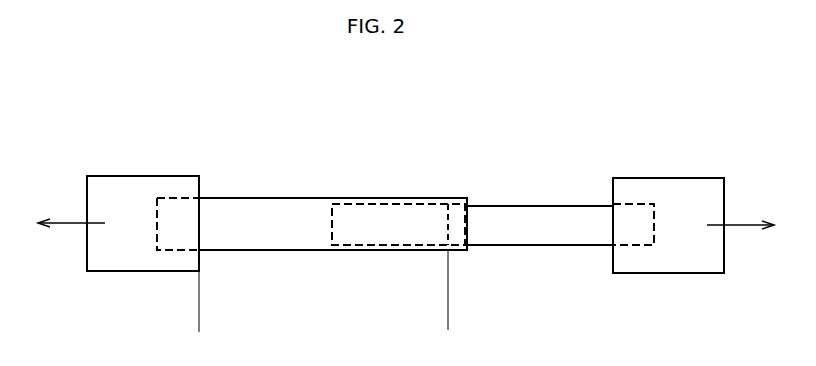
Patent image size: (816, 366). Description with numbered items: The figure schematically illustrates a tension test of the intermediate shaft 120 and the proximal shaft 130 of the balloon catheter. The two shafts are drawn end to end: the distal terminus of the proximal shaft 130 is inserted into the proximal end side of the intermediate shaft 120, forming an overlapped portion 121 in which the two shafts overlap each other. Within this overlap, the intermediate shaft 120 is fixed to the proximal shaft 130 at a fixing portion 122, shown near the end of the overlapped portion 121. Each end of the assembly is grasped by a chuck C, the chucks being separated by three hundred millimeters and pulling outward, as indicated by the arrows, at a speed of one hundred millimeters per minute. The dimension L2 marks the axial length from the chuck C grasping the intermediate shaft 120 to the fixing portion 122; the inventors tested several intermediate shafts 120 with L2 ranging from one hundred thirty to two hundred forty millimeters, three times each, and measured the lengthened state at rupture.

The intermediate shaft 120 is at (280, 196).
The overlapped portion 121 is at (333, 205).
The fixing portion 122 is at (458, 193).
The proximal shaft 130 is at (535, 204).
The chuck C is at (130, 262).
The length L2 is at (448, 317).